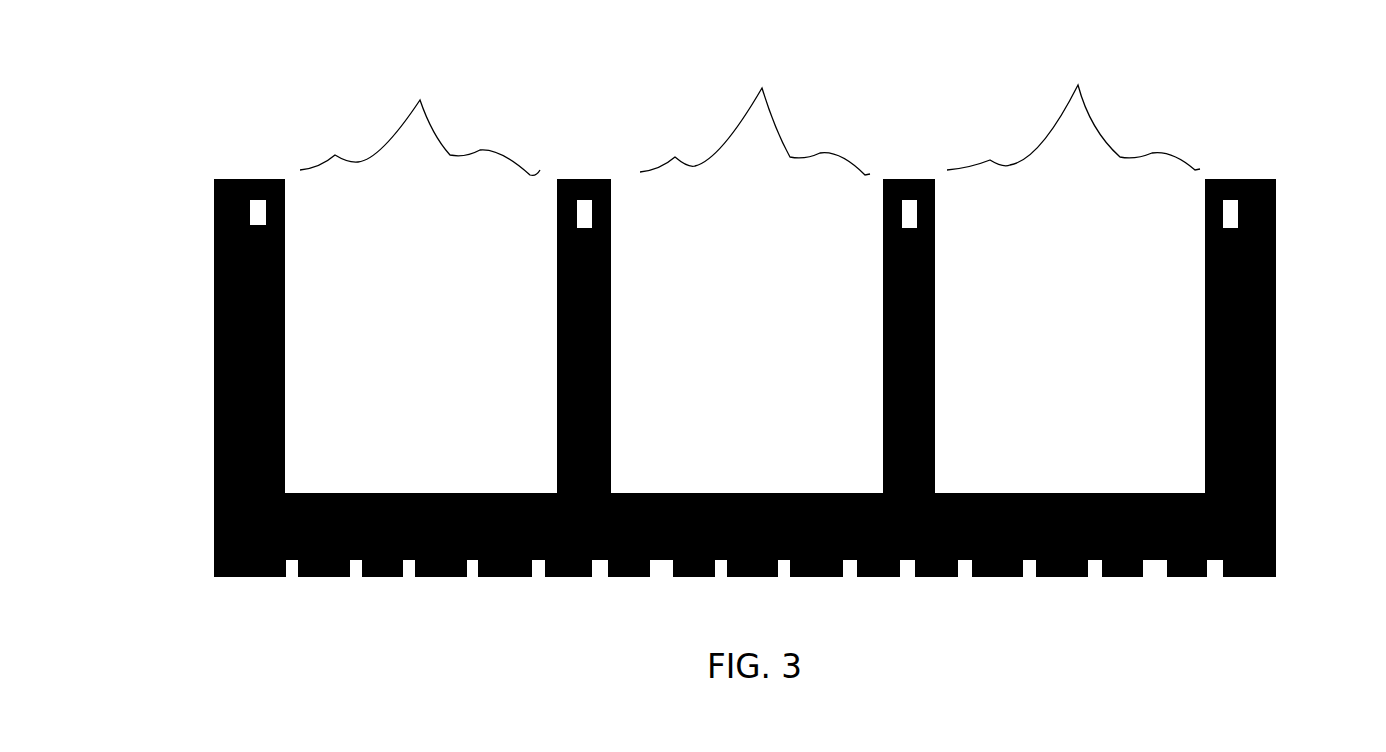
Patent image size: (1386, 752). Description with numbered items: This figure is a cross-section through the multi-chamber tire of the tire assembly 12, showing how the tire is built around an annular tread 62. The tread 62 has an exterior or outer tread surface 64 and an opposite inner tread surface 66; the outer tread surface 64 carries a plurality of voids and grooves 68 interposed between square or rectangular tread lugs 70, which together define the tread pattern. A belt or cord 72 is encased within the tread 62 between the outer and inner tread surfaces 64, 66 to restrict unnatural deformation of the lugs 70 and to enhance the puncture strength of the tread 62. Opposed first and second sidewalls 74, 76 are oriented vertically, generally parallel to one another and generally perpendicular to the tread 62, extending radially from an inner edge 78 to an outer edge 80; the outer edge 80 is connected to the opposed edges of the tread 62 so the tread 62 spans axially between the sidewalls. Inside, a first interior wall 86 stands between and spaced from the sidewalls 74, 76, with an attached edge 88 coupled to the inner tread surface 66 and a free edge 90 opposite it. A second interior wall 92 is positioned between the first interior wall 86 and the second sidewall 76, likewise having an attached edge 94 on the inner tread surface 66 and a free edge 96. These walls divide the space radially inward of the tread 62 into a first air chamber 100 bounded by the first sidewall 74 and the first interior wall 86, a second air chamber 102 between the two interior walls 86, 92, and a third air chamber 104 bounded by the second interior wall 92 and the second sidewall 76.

The tire assembly 12 is at (135, 628).
The annular tread 62 is at (243, 590).
The outer tread surface 64 is at (1243, 580).
The inner tread surface 66 is at (1043, 493).
The voids and grooves 68 is at (783, 579).
The tread lugs 70 is at (750, 579).
The belt 72 is at (1225, 528).
The first sidewall 74 is at (213, 376).
The second sidewall 76 is at (1277, 368).
The inner edge 78 is at (212, 185).
The outer edge 80 is at (212, 480).
The first interior wall 86 is at (547, 348).
The attached edge of first interior wall 88 is at (555, 482).
The free edge of first interior wall 90 is at (552, 190).
The second interior wall 92 is at (852, 345).
The attached edge of second interior wall 94 is at (880, 482).
The free edge of second interior wall 96 is at (878, 190).
The first air chamber 100 is at (420, 114).
The second air chamber 102 is at (755, 112).
The third air chamber 104 is at (1073, 109).